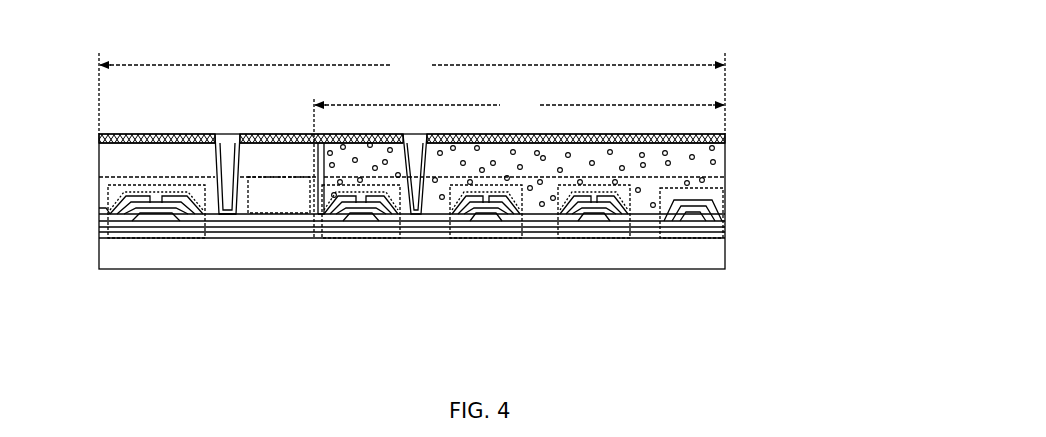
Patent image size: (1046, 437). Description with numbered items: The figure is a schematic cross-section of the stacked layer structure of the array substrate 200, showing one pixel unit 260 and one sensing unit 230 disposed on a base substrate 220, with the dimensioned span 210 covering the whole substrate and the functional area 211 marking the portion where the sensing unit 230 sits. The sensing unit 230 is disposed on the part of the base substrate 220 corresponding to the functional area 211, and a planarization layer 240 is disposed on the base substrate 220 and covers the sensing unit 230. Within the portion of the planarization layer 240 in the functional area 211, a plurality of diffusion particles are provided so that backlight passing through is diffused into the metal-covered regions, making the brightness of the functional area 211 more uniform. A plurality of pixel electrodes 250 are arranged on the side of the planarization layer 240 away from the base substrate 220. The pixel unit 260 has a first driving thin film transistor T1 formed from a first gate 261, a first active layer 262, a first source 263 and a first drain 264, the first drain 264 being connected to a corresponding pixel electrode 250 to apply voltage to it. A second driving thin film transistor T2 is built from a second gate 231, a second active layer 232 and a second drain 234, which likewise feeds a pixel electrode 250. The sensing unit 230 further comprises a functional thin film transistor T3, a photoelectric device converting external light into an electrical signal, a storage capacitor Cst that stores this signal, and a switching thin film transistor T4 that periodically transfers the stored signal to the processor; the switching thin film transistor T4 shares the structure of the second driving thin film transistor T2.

The array substrate 200 is at (629, 48).
The display area 210 is at (412, 56).
The functional area 211 is at (519, 162).
The base substrate 220 is at (726, 248).
The sensing unit 230 is at (726, 200).
The second gate 231 is at (358, 230).
The second active layer 232 is at (323, 235).
The second drain 234 is at (415, 228).
The planarization layer 240 is at (726, 172).
The pixel electrode 250 is at (116, 134).
The pixel unit 260 is at (112, 176).
The first gate 261 is at (150, 235).
The first active layer 262 is at (135, 238).
The first source 263 is at (103, 211).
The first drain 264 is at (215, 216).
The first driving thin film transistor T1 is at (172, 238).
The second driving thin film transistor T2 is at (380, 235).
The functional thin film transistor T3 is at (498, 237).
The switching thin film transistor T4 is at (597, 235).
The storage capacitor Cst is at (682, 235).